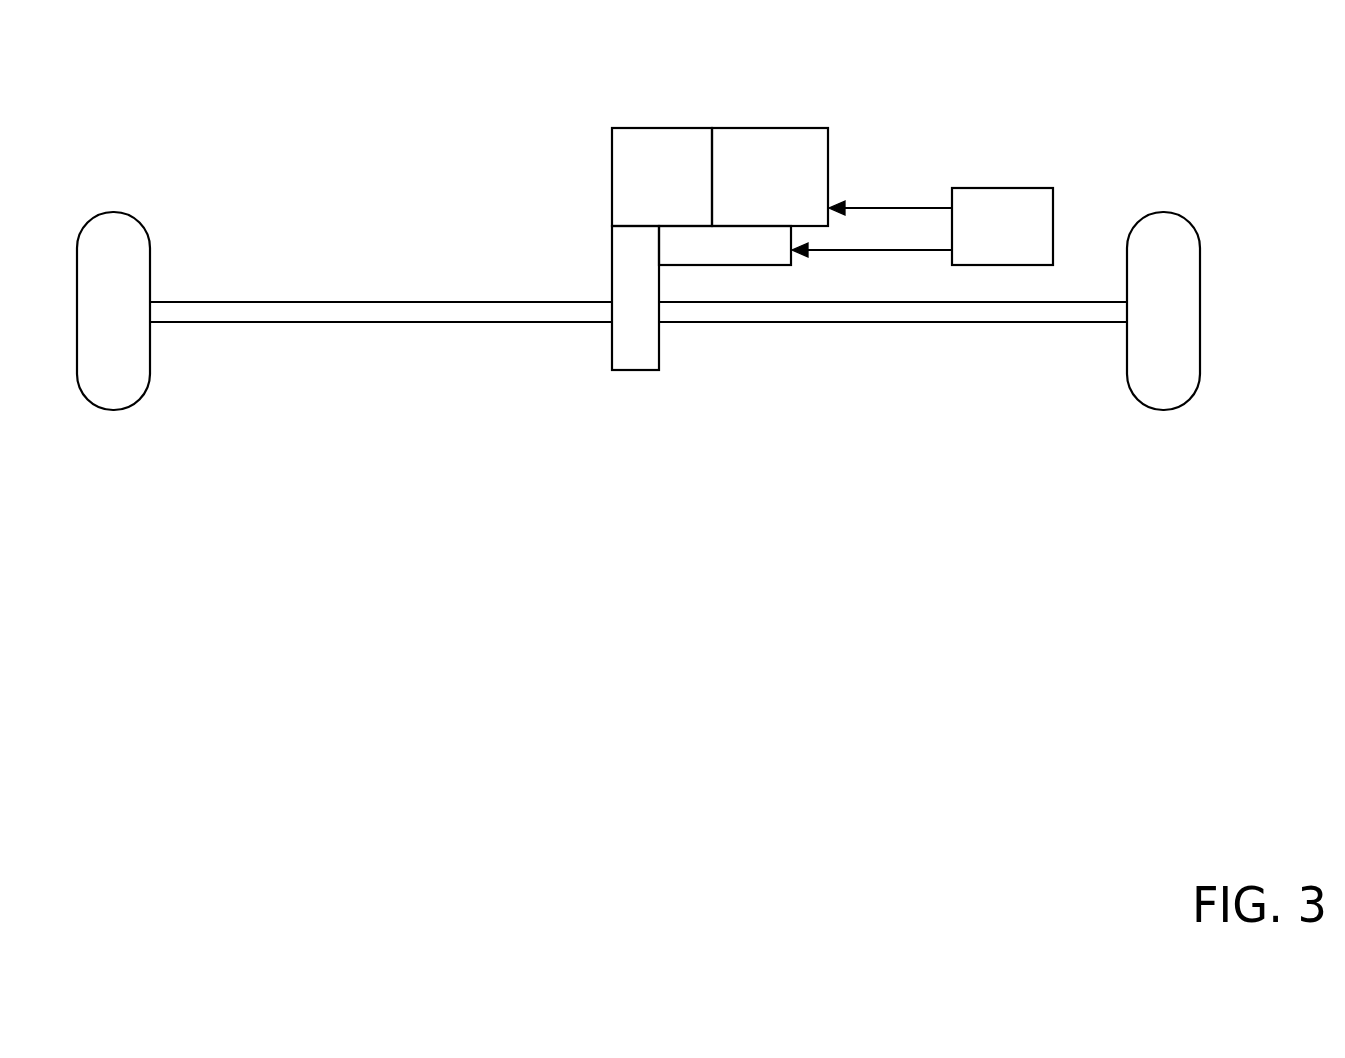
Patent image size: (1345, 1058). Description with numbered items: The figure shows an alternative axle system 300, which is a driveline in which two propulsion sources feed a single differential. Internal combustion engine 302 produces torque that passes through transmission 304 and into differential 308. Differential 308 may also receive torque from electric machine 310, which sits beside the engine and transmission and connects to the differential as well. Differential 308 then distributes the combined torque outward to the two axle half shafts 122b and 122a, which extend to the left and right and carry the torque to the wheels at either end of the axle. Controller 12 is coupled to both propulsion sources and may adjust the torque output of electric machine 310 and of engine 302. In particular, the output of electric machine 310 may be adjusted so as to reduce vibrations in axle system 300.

The axle system 300 is at (166, 64).
The first half shaft 122a is at (856, 302).
The second half shaft 122b is at (207, 302).
The internal combustion engine 302 is at (770, 177).
The transmission 304 is at (662, 177).
The differential 308 is at (635, 298).
The electric machine 310 is at (725, 245).
The controller 12 is at (922, 226).